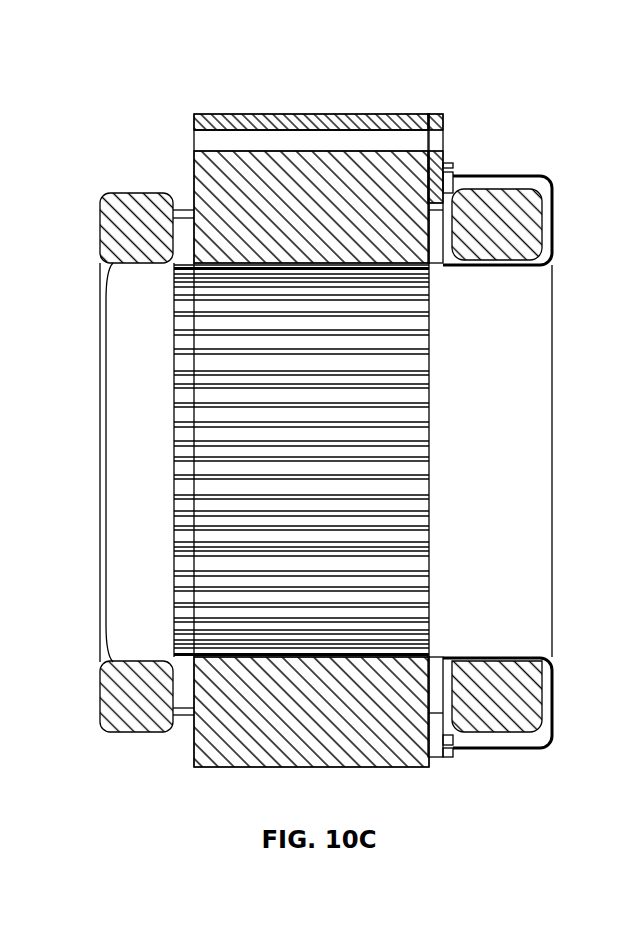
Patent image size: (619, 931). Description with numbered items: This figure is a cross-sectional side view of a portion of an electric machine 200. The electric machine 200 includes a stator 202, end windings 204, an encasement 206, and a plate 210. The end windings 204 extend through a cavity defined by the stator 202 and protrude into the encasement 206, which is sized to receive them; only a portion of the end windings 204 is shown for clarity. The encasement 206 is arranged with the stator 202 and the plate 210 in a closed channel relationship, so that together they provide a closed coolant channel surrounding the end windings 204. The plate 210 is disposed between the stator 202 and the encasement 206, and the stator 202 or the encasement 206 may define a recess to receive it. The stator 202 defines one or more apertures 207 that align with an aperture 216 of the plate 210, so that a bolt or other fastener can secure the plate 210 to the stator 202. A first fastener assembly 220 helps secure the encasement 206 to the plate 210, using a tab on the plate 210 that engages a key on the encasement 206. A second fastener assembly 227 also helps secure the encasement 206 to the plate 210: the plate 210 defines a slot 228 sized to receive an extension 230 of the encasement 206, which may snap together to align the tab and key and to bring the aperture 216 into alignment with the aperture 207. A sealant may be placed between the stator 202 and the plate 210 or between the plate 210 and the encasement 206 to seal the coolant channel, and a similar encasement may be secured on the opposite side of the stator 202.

The electric machine 200 is at (186, 68).
The stator 202 is at (264, 175).
The end windings 204 is at (130, 230).
The encasement 206 is at (540, 176).
The apertures 207 is at (340, 128).
The plate 210 is at (433, 114).
The aperture 216 is at (443, 135).
The first fastener assembly 220 is at (452, 168).
The second fastener assembly 227 is at (599, 489).
The slot 228 is at (599, 569).
The extension 230 is at (599, 642).